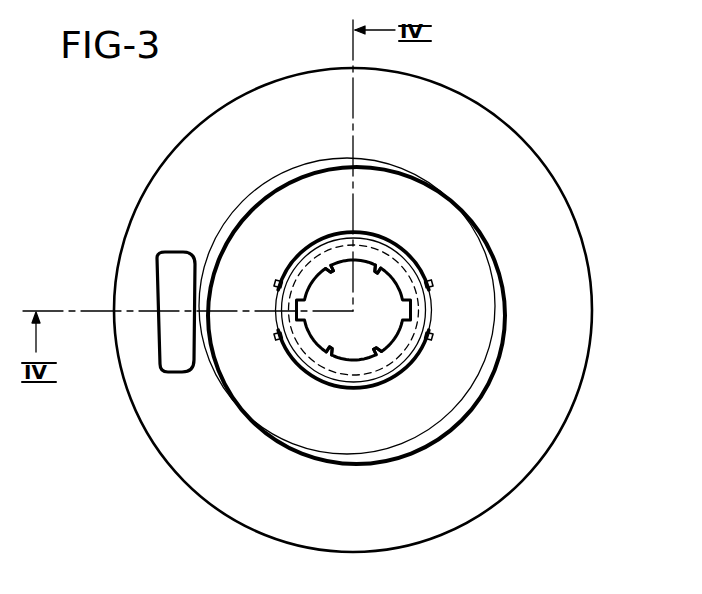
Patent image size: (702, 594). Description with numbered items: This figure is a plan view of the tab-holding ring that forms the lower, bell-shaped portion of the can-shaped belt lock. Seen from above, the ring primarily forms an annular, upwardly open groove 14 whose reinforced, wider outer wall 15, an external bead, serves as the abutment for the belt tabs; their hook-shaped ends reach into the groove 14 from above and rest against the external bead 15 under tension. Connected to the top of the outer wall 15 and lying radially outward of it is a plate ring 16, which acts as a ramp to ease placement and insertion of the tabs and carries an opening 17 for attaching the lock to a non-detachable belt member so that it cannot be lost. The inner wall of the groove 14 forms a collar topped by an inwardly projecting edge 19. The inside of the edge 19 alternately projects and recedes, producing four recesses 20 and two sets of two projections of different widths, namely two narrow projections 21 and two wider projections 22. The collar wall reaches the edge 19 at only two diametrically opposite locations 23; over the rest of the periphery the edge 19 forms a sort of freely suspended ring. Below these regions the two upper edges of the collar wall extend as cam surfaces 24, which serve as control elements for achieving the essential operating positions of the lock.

The groove 14 is at (279, 196).
The outer wall 15 is at (225, 385).
The plate ring 16 is at (155, 183).
The opening 17 is at (162, 290).
The inwardly projecting edge 19 is at (403, 273).
The recesses 20 is at (324, 269).
The narrow projections 21 is at (408, 313).
The wider projections 22 is at (333, 250).
The locations 23 is at (273, 297).
The cam surfaces 24 is at (382, 237).